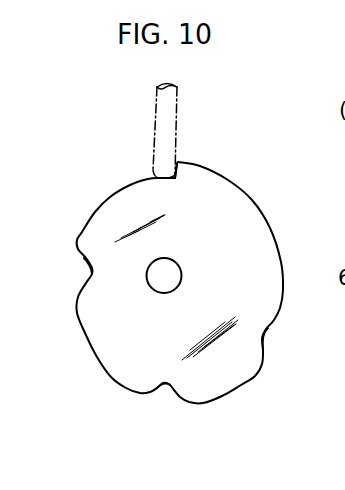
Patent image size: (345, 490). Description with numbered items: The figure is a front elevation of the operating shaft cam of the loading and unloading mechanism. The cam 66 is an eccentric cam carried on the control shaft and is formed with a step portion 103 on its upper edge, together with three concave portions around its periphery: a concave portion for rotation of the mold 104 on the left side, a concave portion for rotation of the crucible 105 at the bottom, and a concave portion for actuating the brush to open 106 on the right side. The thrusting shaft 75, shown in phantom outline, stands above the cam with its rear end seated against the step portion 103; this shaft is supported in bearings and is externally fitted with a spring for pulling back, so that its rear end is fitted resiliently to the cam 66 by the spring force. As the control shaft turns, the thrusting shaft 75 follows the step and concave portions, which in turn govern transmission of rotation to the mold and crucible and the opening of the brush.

The cam 66 is at (238, 252).
The thrusting shaft 75 is at (166, 105).
The step portion 103 is at (184, 162).
The concave portion for rotation of the mold 104 is at (91, 273).
The concave portion for rotation of the crucible 105 is at (164, 389).
The concave portion for actuating the brush to open 106 is at (264, 336).